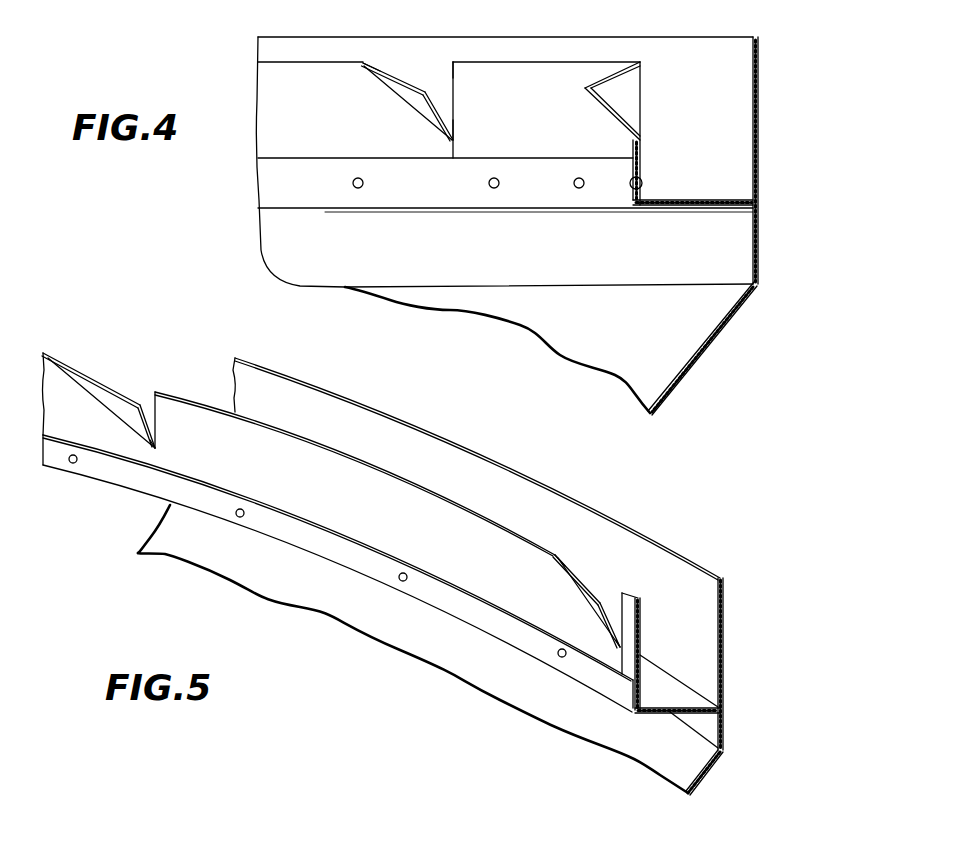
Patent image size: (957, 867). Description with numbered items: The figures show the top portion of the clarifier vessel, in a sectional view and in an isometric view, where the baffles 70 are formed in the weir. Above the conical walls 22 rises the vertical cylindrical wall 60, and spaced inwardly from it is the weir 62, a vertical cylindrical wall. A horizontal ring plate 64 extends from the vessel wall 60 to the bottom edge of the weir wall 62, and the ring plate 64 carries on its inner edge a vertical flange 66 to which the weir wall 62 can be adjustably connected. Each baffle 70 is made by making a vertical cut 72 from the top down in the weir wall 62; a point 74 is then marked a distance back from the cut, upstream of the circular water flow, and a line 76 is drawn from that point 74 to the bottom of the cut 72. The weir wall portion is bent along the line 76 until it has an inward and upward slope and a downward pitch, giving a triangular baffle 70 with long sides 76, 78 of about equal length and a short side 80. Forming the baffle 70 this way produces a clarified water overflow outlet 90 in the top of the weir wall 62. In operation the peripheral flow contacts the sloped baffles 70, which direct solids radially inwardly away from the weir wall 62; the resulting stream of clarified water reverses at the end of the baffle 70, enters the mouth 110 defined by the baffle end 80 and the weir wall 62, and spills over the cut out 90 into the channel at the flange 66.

In FIG. 4, the walls 22 is at (712, 342).
In FIG. 5, the walls 22 is at (705, 775).
In FIG. 4, the vertical cylindrical wall 60 is at (760, 132).
In FIG. 5, the vertical cylindrical wall 60 is at (722, 643).
In FIG. 4, the weir 62 is at (277, 98).
In FIG. 5, the weir 62 is at (642, 640).
In FIG. 4, the horizontal ring plate 64 is at (695, 207).
In FIG. 5, the horizontal ring plate 64 is at (657, 717).
In FIG. 4, the vertical flange 66 is at (713, 67).
In FIG. 5, the vertical flange 66 is at (450, 470).
In FIG. 4, the baffle 70 is at (507, 73).
In FIG. 5, the baffle 70 is at (377, 474).
In FIG. 4, the vertical cut 72 is at (452, 78).
In FIG. 4, the point 74 is at (363, 63).
In FIG. 5, the point 74 is at (557, 553).
In FIG. 4, the line 76 is at (405, 102).
In FIG. 5, the line 76 is at (105, 405).
In FIG. 4, the long side 78 is at (410, 83).
In FIG. 5, the long side 78 is at (122, 392).
In FIG. 4, the short side 80 is at (455, 101).
In FIG. 5, the short side 80 is at (150, 427).
In FIG. 5, the clarified water overflow outlet 90 is at (147, 392).
In FIG. 4, the mouth 110 is at (455, 118).
In FIG. 5, the mouth 110 is at (145, 408).